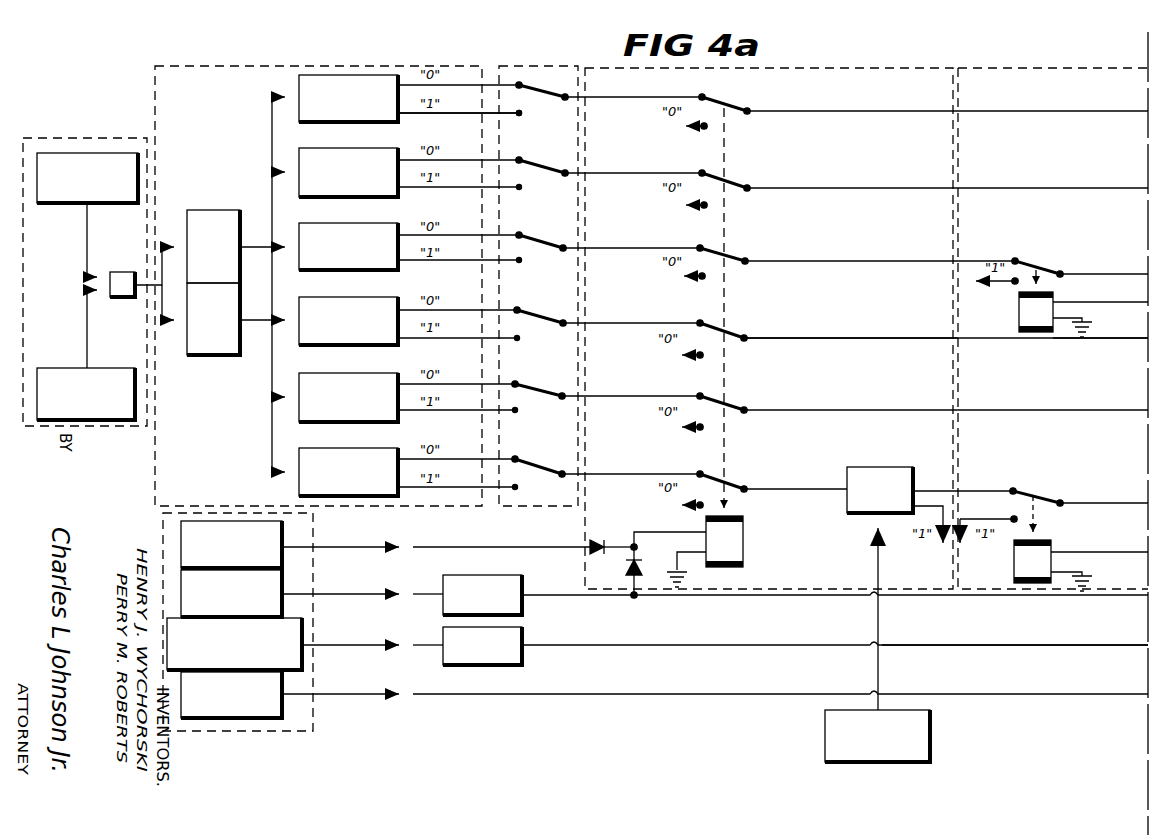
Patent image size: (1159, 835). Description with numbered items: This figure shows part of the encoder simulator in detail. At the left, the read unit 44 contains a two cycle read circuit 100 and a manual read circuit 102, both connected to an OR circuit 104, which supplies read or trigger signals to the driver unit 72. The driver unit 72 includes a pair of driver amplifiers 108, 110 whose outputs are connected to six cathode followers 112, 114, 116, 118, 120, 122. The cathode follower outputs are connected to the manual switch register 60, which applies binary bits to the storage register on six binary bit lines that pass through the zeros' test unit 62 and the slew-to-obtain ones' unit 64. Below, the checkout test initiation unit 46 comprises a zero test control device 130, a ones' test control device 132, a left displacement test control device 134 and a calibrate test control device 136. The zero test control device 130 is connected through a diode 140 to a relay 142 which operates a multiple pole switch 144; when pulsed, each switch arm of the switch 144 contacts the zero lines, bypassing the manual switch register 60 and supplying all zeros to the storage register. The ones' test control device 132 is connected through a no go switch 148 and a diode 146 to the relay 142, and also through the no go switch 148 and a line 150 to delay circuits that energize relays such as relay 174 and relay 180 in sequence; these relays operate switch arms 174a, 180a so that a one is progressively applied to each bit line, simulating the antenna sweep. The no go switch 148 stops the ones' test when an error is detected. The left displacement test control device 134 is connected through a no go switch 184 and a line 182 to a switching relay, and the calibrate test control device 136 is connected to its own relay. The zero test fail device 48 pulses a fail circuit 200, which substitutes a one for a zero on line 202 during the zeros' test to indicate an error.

The read unit 44 is at (86, 138).
The two cycle read circuit 100 is at (80, 203).
The manual read circuit 102 is at (50, 368).
The OR circuit 104 is at (128, 299).
The driver unit 72 is at (272, 66).
The driver amplifier 108 is at (232, 210).
The driver amplifier 110 is at (214, 357).
The cathode follower 112 is at (375, 75).
The cathode follower 114 is at (372, 148).
The cathode follower 116 is at (372, 223).
The cathode follower 118 is at (372, 297).
The cathode follower 120 is at (370, 373).
The cathode follower 122 is at (370, 448).
The manual switch register 60 is at (512, 66).
The zeros' test unit 62 is at (894, 68).
The slew-to-obtain ones' unit 64 is at (1062, 68).
The multiple pole switch 144 is at (726, 302).
The relay 174 is at (1019, 313).
The switch arm 174a is at (1039, 268).
The fail circuit 200 is at (856, 467).
The line 202 is at (934, 489).
The relay 180 is at (1020, 574).
The switch arm 180a is at (1030, 496).
The zero test fail device 48 is at (820, 736).
The checkout test initiation unit 46 is at (236, 731).
The zero test control device 130 is at (284, 536).
The ones' test control device 132 is at (284, 582).
The left displacement test control device 134 is at (304, 626).
The calibrate test control device 136 is at (284, 706).
The no go switch 148 is at (544, 575).
The no go switch 184 is at (542, 623).
The line 182 is at (1005, 645).
The line 150 is at (754, 598).
The diode 140 is at (605, 543).
The diode 146 is at (648, 576).
The relay 142 is at (745, 552).